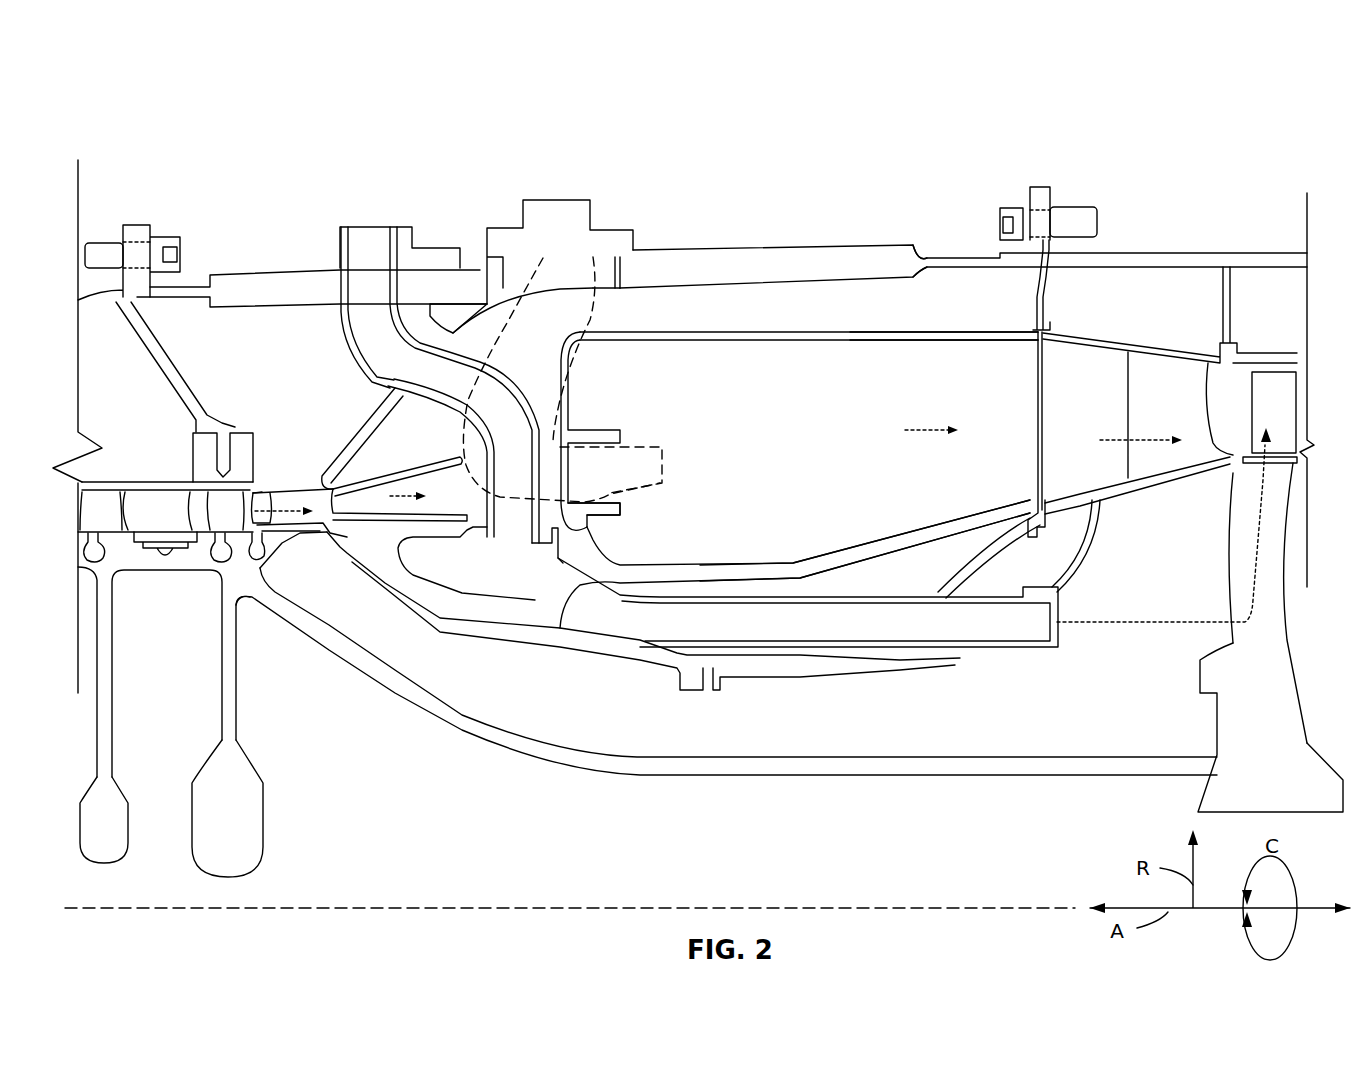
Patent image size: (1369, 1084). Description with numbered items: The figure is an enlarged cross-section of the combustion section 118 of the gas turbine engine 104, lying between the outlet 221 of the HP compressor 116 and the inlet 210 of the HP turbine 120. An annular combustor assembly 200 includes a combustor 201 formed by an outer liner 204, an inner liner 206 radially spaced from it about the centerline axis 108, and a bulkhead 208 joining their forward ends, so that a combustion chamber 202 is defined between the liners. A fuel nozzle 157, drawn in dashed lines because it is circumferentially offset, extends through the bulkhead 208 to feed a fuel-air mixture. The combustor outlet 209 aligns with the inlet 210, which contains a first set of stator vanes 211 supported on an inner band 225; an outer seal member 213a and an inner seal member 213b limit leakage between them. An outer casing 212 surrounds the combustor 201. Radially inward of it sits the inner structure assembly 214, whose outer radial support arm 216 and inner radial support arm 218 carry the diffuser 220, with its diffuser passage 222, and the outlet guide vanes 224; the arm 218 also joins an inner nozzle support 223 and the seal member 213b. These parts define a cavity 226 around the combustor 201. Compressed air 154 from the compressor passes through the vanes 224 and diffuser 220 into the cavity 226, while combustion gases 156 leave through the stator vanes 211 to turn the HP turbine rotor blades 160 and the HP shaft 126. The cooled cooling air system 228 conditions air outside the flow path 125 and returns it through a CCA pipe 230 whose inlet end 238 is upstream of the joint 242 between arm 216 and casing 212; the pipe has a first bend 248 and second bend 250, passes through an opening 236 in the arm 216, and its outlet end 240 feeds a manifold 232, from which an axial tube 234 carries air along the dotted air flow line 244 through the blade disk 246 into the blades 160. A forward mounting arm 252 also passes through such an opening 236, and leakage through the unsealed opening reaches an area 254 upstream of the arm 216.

The gas turbine engine 104 is at (288, 70).
The centerline axis 108 is at (435, 907).
The HP compressor 116 is at (108, 212).
The combustion section 118 is at (452, 178).
The HP turbine 120 is at (1131, 200).
The flow path 125 is at (928, 255).
The HP shaft 126 is at (580, 757).
The compressed air 154 is at (297, 515).
The combustion gases 156 is at (923, 433).
The fuel nozzle 157 is at (647, 447).
The HP turbine rotor blades 160 is at (1273, 387).
The combustor assembly 200 is at (818, 270).
The combustor 201 is at (740, 341).
The combustion chamber 202 is at (770, 441).
The outer liner 204 is at (878, 338).
The inner liner 206 is at (803, 557).
The bulkhead 208 is at (592, 540).
The outlet 209 is at (1040, 380).
The inlet 210 is at (1030, 430).
The first set of stator vanes 211 is at (1155, 380).
The outer casing 212 is at (743, 267).
The outer seal member 213a is at (1027, 327).
The inner seal member 213b is at (967, 577).
The inner structure assembly 214 is at (280, 382).
The outer radial support arm 216 is at (350, 443).
The inner radial support arm 218 is at (483, 637).
The diffuser 220 is at (417, 460).
The outlet 221 is at (253, 478).
The diffuser passage 222 is at (376, 490).
The inner nozzle support 223 is at (1072, 577).
The outlet guide vanes 224 is at (290, 500).
The inner band 225 is at (1117, 484).
The cavity 226 is at (615, 324).
The cooled cooling air (CCA) system 228 is at (283, 220).
The CCA pipe 230 is at (345, 322).
The manifold 232 is at (423, 590).
The axial tube 234 is at (863, 595).
The opening 236 is at (368, 387).
The inlet end 238 is at (349, 212).
The outlet end 240 is at (463, 553).
The joint 242 is at (493, 300).
The air flow line 244 is at (1150, 622).
The blade disk 246 is at (1233, 553).
The first bend 248 is at (372, 370).
The second bend 250 is at (537, 362).
The forward mounting arm 252 is at (452, 333).
The area 254 is at (188, 339).